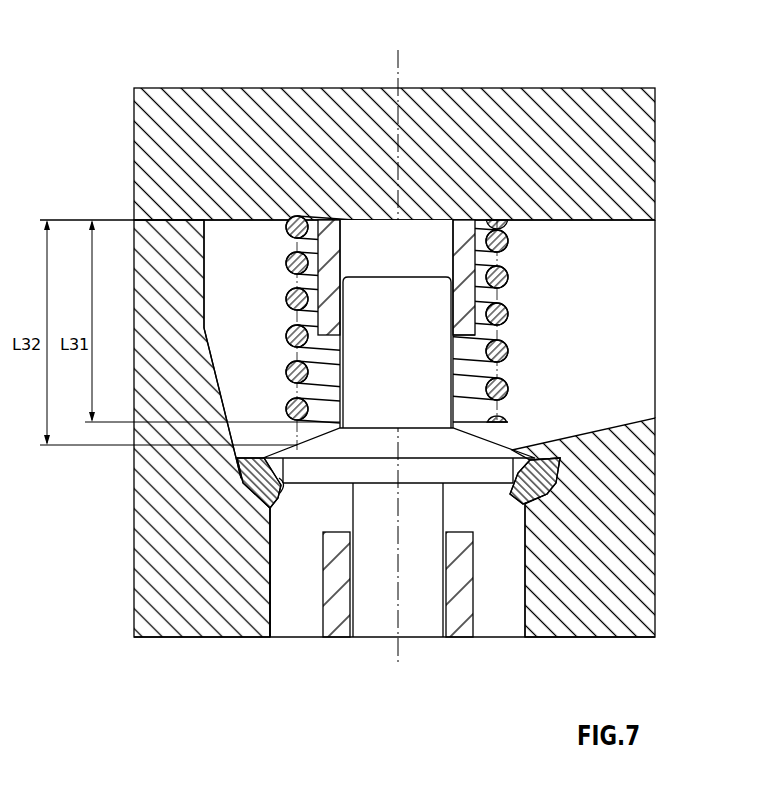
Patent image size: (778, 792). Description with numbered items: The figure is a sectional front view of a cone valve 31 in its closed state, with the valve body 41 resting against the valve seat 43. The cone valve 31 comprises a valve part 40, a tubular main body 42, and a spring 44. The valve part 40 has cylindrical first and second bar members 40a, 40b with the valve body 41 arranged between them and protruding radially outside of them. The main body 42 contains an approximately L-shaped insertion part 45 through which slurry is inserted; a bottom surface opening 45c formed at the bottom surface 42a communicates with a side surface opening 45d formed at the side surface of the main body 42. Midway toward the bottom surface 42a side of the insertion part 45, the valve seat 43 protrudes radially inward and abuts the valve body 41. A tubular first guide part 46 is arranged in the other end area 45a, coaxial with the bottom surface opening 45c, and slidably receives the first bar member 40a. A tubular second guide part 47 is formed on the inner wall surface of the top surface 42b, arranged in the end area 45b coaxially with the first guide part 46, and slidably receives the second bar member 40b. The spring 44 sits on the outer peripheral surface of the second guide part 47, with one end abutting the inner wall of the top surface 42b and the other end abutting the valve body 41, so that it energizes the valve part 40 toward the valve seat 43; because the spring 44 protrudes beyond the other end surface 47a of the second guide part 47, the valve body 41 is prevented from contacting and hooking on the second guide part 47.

The cone valve 31 is at (729, 49).
The valve part 40 is at (503, 470).
The first bar member 40a is at (410, 568).
The second bar member 40b is at (430, 383).
The valve body 41 is at (508, 452).
The main body 42 is at (128, 122).
The bottom surface 42a is at (160, 637).
The top surface 42b is at (168, 88).
The valve seat 43 is at (272, 505).
The spring 44 is at (512, 310).
The insertion part 45 is at (308, 358).
The other end area 45a is at (308, 622).
The end area 45b is at (247, 262).
The bottom surface opening 45c is at (270, 620).
The side surface opening 45d is at (617, 221).
The first guide part 46 is at (470, 596).
The second guide part 47 is at (478, 256).
The other end surface 47a is at (470, 342).